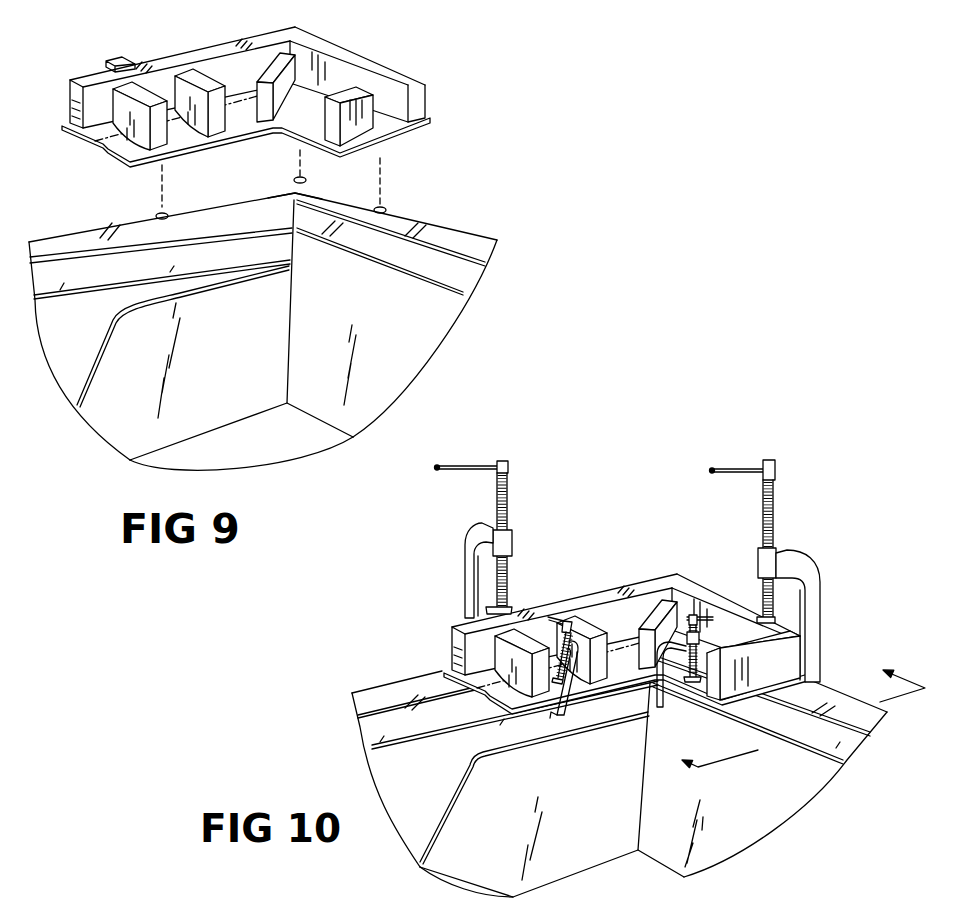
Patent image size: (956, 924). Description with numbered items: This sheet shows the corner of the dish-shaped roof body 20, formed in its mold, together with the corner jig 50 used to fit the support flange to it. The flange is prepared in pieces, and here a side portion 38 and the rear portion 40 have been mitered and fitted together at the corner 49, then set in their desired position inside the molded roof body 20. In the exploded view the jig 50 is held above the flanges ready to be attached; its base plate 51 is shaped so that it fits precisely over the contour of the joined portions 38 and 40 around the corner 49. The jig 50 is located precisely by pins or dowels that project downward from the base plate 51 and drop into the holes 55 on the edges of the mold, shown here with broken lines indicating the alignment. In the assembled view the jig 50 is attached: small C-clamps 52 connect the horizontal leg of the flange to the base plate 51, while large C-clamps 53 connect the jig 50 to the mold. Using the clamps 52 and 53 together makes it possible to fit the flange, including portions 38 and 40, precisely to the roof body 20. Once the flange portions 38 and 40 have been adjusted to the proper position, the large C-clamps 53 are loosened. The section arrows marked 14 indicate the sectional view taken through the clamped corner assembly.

In FIG. 10, the section line 14- 14 is at (792, 704).
In FIG. 9, the roof body 20 is at (418, 350).
In FIG. 9, the side portion 38 is at (72, 266).
In FIG. 10, the side portion 38 is at (378, 722).
In FIG. 9, the rear portion 40 is at (433, 258).
In FIG. 10, the rear portion 40 is at (846, 746).
In FIG. 9, the corner 49 is at (273, 200).
In FIG. 9, the jig 50 is at (200, 18).
In FIG. 10, the jig 50 is at (694, 586).
In FIG. 9, the base plate 51 is at (400, 136).
In FIG. 10, the base plate 51 is at (815, 675).
In FIG. 10, the small C-clamps 52 is at (555, 716).
In FIG. 10, the large C-clamps 53 is at (472, 538).
In FIG. 9, the holes 55 is at (163, 213).